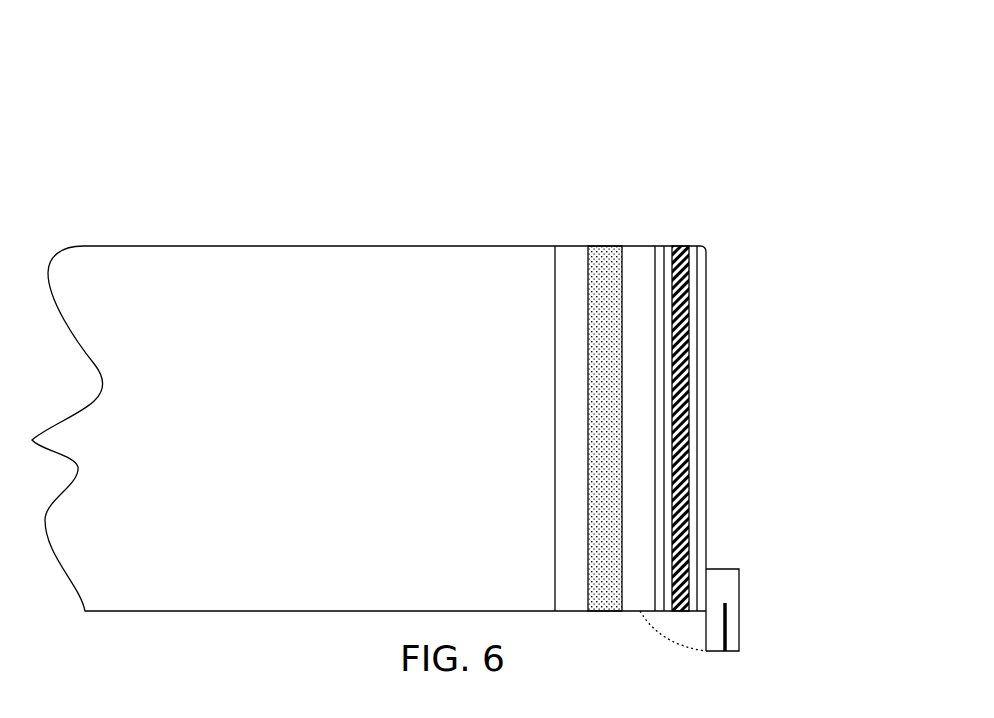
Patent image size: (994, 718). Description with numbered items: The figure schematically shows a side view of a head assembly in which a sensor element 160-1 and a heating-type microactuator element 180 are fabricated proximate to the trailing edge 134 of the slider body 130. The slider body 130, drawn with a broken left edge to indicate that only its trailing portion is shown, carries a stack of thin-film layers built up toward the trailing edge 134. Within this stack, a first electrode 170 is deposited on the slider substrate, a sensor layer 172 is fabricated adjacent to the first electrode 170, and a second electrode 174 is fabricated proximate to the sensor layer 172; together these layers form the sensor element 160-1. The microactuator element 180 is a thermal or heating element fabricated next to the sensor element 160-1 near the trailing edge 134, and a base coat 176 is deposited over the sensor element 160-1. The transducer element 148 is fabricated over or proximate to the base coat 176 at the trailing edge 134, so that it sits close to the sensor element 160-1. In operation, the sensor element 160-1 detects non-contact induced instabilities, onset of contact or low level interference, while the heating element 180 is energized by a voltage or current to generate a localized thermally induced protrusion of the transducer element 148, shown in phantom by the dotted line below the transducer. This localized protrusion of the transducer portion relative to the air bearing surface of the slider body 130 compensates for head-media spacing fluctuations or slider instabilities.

The slider body 130 is at (290, 332).
The sensor element 160-1 is at (708, 126).
The first electrode 170 is at (578, 246).
The sensor layer 172 is at (607, 246).
The second electrode 174 is at (640, 246).
The microactuator element 180 is at (680, 246).
The base coat 176 is at (707, 492).
The trailing edge 134 is at (710, 425).
The transducer element 148 is at (740, 580).